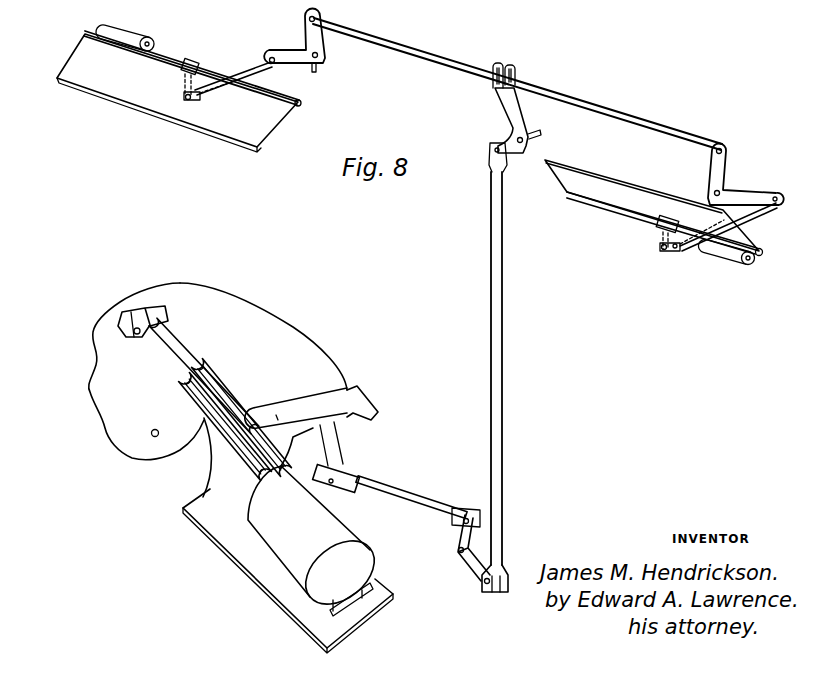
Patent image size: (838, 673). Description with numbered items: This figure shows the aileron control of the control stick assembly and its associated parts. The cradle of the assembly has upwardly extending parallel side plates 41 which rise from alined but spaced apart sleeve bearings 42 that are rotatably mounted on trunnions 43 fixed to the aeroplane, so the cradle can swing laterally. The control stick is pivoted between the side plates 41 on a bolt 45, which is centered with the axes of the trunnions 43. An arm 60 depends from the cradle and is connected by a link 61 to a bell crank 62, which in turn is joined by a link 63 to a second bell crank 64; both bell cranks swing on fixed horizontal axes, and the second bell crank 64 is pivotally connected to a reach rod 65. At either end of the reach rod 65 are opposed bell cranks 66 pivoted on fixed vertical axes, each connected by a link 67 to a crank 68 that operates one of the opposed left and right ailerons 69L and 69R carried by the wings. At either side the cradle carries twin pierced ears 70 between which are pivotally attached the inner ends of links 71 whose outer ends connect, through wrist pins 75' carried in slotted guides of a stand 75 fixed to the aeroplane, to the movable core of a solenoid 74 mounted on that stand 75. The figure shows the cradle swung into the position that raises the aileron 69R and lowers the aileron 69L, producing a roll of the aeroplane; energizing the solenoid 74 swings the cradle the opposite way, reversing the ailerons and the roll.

The side plates 41 is at (218, 390).
The sleeve bearings 42 is at (325, 403).
The trunnions 43 is at (362, 413).
The bolt 45 is at (150, 436).
The arm 60 is at (342, 448).
The link 61 is at (386, 490).
The bell crank 62 is at (468, 566).
The link 63 is at (498, 384).
The second bell crank 64 is at (508, 120).
The reach rod 65 is at (548, 99).
The bell cranks 66 is at (322, 36).
The links 67 is at (256, 66).
The cranks 68 is at (198, 70).
The left aileron 69L is at (134, 97).
The right aileron 69R is at (598, 184).
The twin pierced ears 70 is at (164, 318).
The links 71 is at (166, 347).
The solenoid 74 is at (287, 556).
The stand 75 is at (284, 571).
The wrist pins 75' is at (223, 420).